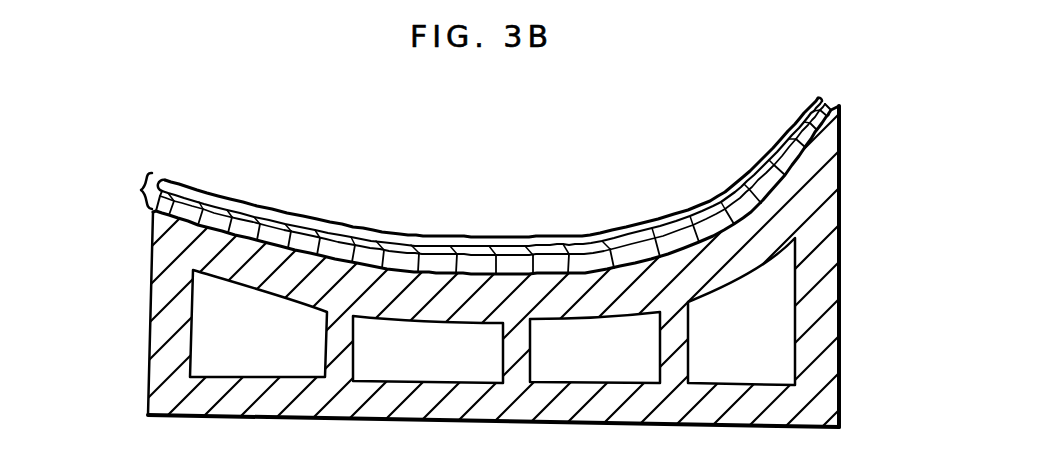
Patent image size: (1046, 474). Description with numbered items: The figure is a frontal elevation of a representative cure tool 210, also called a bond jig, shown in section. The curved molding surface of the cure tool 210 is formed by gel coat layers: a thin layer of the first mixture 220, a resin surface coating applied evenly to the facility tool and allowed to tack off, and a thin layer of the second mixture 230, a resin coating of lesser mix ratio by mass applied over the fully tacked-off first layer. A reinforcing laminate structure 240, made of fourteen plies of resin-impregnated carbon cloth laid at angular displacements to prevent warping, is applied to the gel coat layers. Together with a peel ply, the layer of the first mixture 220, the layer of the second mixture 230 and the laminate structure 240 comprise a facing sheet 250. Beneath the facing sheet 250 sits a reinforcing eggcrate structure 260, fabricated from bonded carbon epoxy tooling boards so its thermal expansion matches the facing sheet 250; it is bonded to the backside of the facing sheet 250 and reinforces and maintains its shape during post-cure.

The cure tool 210 is at (522, 164).
The layer of the first mixture 220 is at (814, 99).
The layer of the second mixture 230 is at (828, 103).
The laminate structure 240 is at (841, 105).
The facing sheet 250 is at (140, 188).
The eggcrate structure 260 is at (508, 406).